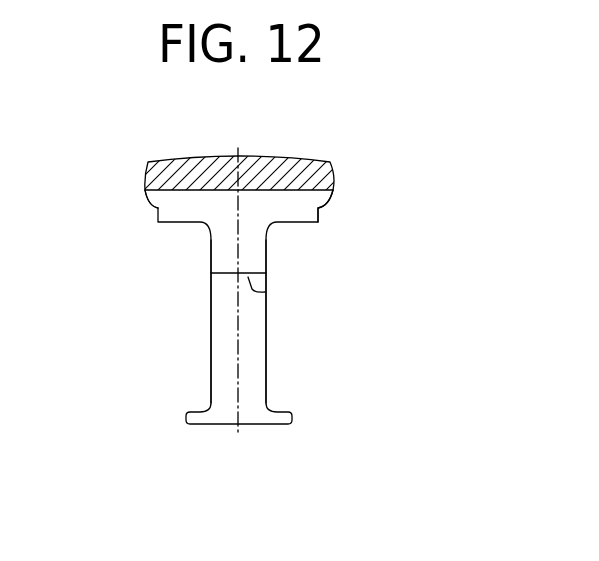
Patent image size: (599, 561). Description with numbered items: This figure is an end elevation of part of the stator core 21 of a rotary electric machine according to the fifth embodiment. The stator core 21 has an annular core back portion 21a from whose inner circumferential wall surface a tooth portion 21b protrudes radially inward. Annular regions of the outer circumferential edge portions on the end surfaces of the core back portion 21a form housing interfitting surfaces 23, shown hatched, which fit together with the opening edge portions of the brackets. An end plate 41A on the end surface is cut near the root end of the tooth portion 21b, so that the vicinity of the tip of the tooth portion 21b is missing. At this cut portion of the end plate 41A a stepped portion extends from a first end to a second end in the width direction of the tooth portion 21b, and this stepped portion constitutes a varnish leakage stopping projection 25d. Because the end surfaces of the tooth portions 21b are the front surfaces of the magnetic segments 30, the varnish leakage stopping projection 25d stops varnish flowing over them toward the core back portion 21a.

The stator core 21 is at (340, 172).
The housing interfitting surface 23 is at (150, 166).
The end plate 41A is at (152, 207).
The core back portion 21a is at (327, 204).
The varnish leakage stopping projection 25d is at (265, 292).
The tooth portion 21b is at (260, 325).
The magnetic segment 30 is at (217, 314).